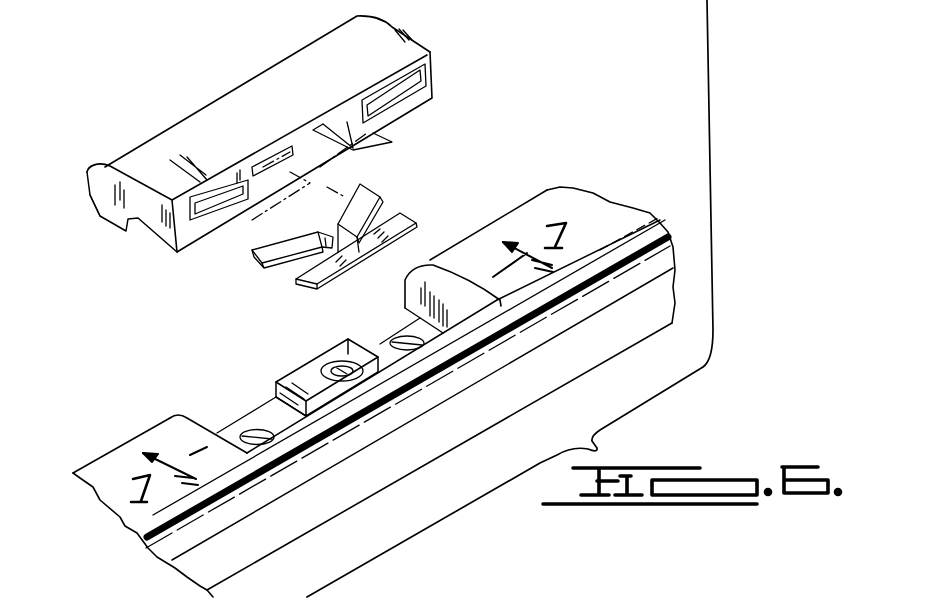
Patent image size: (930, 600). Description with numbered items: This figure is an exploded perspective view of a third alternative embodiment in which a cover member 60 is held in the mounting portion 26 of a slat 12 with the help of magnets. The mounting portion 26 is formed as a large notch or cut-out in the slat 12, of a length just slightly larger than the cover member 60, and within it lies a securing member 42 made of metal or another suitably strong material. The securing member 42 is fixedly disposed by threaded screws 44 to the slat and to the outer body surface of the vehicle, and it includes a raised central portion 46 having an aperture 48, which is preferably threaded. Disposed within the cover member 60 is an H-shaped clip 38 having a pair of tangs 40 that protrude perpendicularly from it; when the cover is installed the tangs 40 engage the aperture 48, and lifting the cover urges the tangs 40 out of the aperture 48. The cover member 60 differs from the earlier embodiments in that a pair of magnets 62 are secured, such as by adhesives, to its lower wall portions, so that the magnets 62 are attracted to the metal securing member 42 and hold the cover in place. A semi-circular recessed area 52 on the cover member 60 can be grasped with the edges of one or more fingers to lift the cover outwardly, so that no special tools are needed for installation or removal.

The slat 12 is at (102, 463).
The mounting portion 26 is at (180, 407).
The clip 38 is at (418, 215).
The tangs 40 is at (305, 262).
The securing member 42 is at (273, 366).
The threaded screws 44 is at (244, 430).
The raised central portion 46 is at (300, 377).
The aperture 48 is at (340, 362).
The semi-circular recessed area 52 is at (98, 196).
The cover member 60 is at (246, 153).
The magnets 62 is at (205, 233).